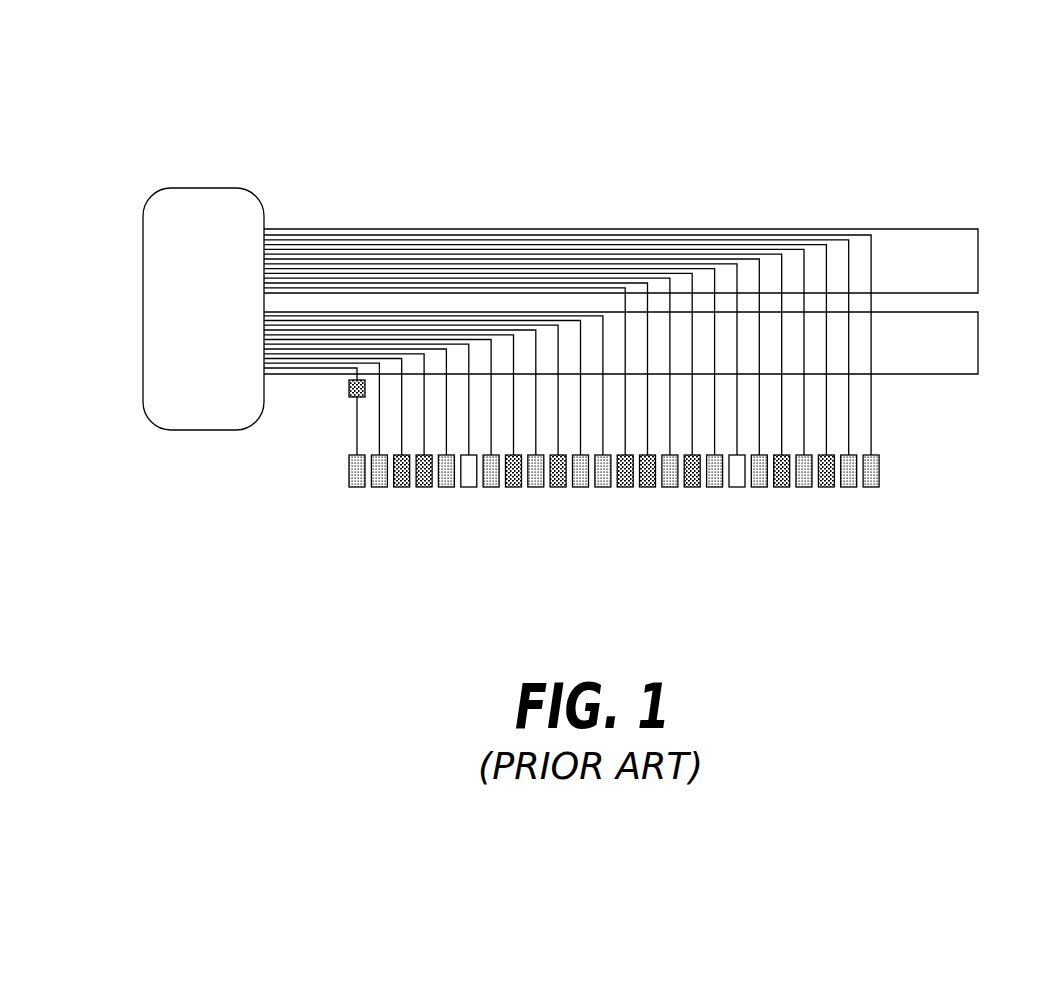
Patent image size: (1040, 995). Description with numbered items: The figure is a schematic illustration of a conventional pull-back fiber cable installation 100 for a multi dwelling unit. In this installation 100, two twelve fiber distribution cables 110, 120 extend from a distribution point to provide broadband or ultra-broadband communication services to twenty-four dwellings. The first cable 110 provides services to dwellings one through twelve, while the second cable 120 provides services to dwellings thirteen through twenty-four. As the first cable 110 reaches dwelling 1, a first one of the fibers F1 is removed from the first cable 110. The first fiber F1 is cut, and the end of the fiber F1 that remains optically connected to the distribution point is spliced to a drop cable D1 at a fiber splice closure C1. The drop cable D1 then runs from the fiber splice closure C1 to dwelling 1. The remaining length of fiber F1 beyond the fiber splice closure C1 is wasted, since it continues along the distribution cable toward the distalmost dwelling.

The installation 100 is at (637, 94).
The first cable 110 is at (978, 366).
The second cable 120 is at (978, 240).
The first fiber F1 is at (297, 379).
The fiber splice closure C1 is at (349, 389).
The drop cable D1 is at (357, 424).
The dwelling 1 is at (352, 480).